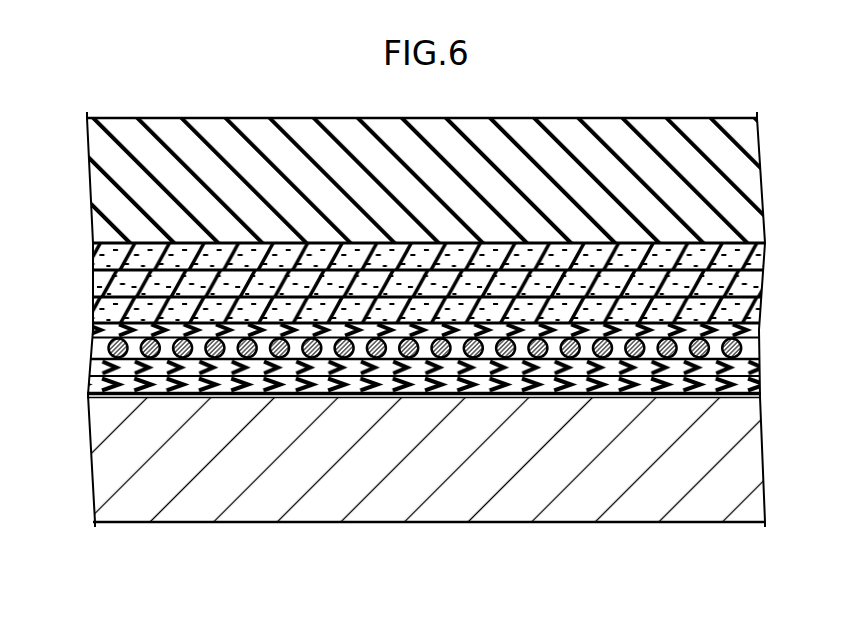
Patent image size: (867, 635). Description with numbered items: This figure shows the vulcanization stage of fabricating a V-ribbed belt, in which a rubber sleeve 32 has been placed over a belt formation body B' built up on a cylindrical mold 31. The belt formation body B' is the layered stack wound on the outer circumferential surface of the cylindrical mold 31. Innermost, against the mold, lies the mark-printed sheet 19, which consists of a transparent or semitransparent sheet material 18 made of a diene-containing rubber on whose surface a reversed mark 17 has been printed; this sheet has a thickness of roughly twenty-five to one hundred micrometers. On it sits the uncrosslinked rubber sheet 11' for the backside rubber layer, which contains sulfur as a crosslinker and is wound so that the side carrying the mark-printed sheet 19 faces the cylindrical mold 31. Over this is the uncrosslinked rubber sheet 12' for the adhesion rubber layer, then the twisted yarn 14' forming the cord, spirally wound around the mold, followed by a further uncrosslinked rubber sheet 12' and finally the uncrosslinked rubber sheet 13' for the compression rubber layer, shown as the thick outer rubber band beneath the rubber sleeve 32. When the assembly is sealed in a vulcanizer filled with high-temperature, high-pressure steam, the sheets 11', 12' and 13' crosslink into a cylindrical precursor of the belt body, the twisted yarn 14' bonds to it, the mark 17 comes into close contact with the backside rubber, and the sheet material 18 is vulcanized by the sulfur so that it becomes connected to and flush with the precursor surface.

The rubber sleeve 32 is at (450, 196).
The cylindrical mold 31 is at (557, 468).
The uncrosslinked rubber sheet for compression rubber layer 13' is at (398, 283).
The uncrosslinked rubber sheet for adhesion rubber layer 12' is at (420, 349).
The twisted yarn 14' is at (461, 348).
The uncrosslinked rubber sheet for backside rubber layer 11' is at (426, 474).
The reversed mark 17 is at (423, 395).
The sheet material 18 is at (447, 399).
The mark-printed sheet 19 is at (424, 505).
The belt formation body B' is at (774, 217).